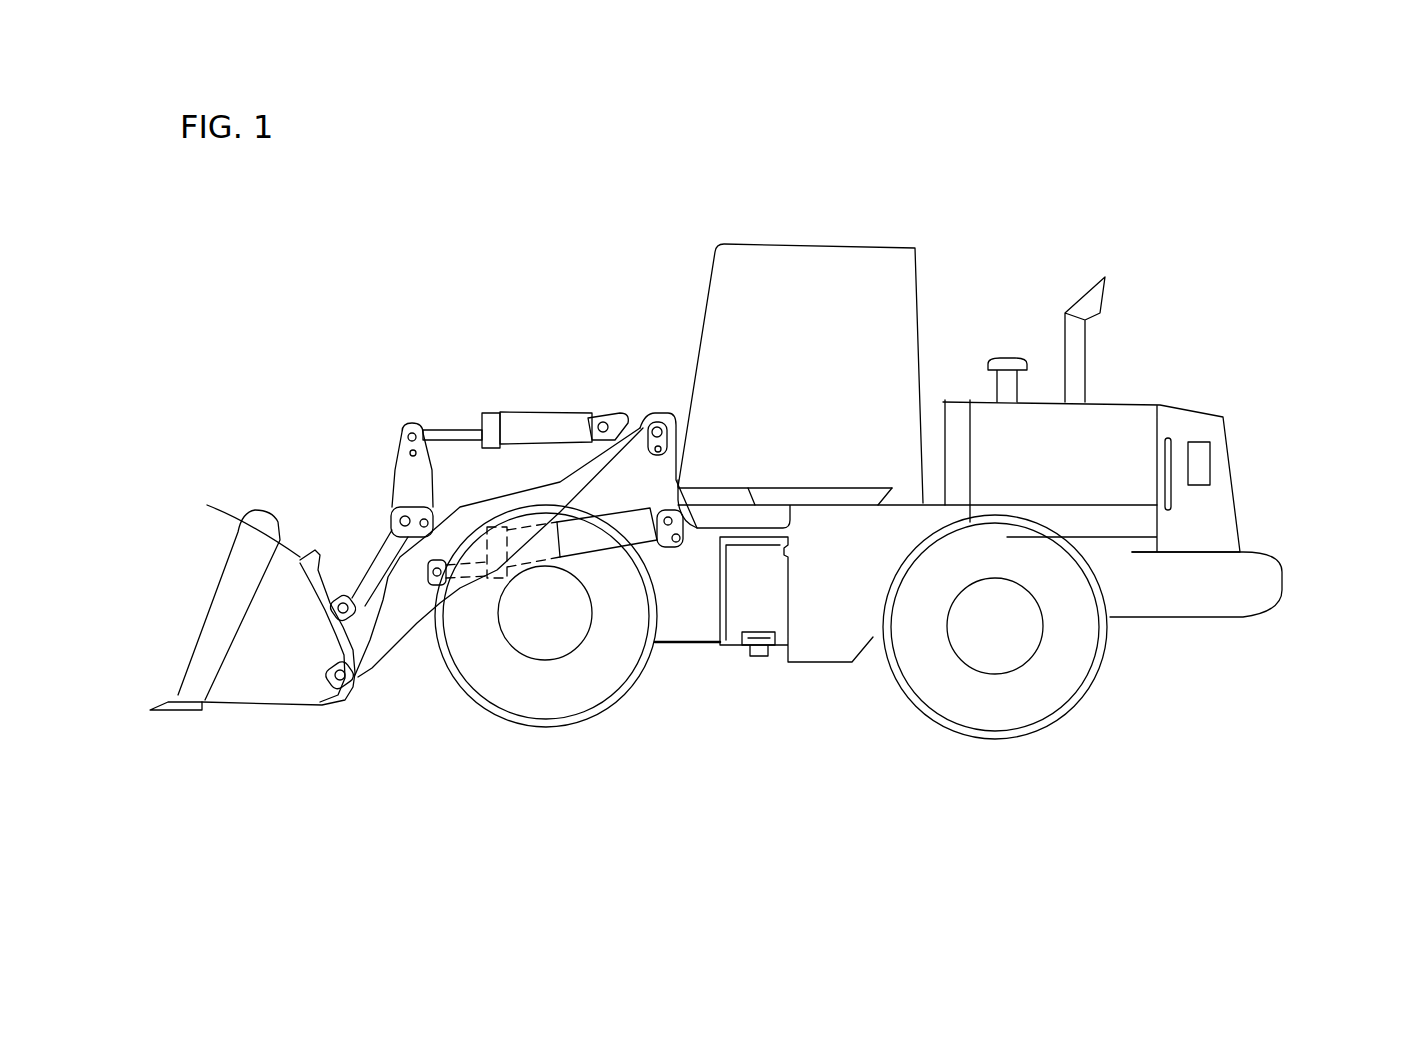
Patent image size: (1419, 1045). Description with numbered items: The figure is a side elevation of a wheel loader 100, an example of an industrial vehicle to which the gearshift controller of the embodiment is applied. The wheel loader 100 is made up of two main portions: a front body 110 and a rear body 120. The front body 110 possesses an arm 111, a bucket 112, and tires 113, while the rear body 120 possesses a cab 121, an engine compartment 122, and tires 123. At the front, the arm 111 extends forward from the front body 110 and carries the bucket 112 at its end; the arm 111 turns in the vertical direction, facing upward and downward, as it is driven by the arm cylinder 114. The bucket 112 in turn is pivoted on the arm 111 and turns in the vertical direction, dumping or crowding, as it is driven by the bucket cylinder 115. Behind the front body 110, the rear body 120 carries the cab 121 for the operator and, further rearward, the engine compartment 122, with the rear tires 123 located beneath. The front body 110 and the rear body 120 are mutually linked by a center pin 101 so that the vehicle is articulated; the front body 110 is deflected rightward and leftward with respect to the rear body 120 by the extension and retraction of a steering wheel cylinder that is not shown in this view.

The wheel loader 100 is at (1185, 663).
The center pin 101 is at (757, 656).
The front body 110 is at (642, 428).
The arm 111 is at (383, 583).
The bucket 112 is at (250, 523).
The tires 113 is at (532, 690).
The arm cylinder 114 is at (497, 578).
The bucket cylinder 115 is at (535, 412).
The rear body 120 is at (1253, 580).
The cab 121 is at (760, 263).
The engine compartment 122 is at (1138, 425).
The tires 123 is at (1015, 707).